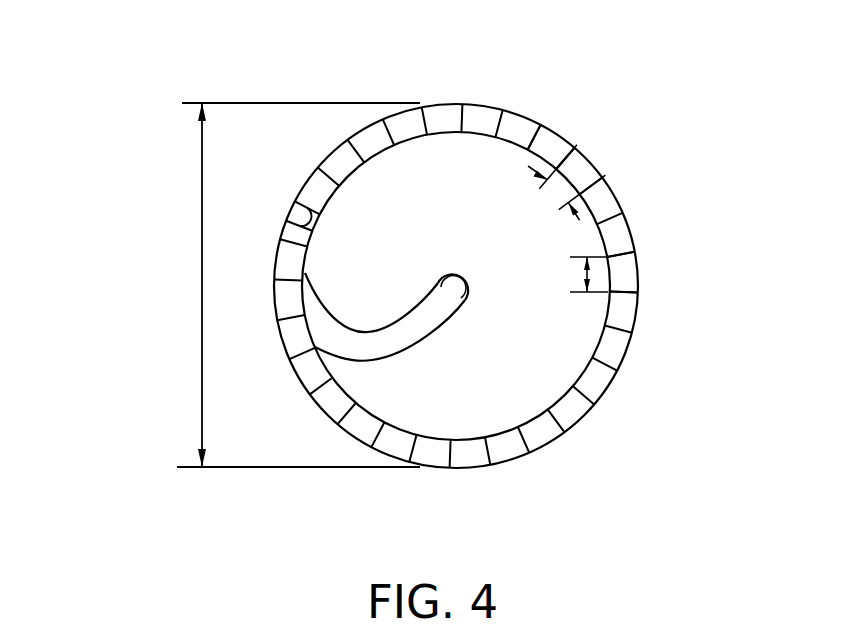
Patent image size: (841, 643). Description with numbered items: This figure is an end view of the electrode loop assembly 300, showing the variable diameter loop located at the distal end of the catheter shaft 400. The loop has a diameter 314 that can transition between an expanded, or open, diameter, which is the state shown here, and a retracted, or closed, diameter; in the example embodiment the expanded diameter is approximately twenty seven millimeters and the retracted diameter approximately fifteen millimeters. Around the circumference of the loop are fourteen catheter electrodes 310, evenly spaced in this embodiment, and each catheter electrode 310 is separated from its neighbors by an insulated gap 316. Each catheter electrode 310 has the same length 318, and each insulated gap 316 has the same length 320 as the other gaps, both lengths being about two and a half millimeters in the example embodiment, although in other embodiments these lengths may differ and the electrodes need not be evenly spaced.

The electrode loop assembly 300 is at (163, 122).
The catheter electrode 310 is at (627, 223).
The diameter 314 is at (202, 285).
The insulated gap 316 is at (552, 128).
The length 318 is at (545, 192).
The length 320 is at (585, 275).
The catheter shaft 400 is at (455, 271).